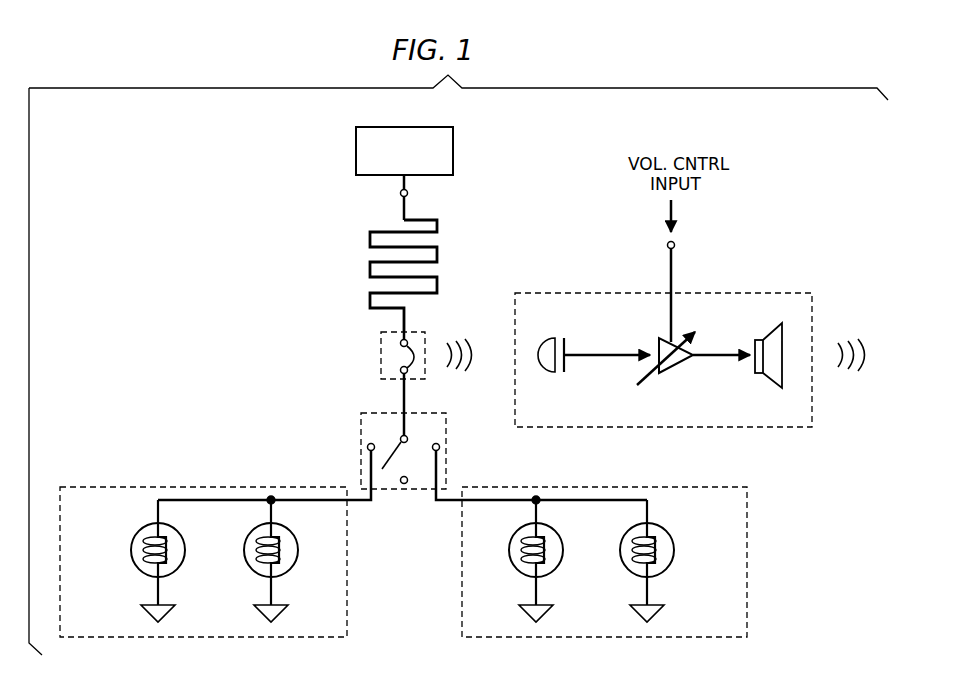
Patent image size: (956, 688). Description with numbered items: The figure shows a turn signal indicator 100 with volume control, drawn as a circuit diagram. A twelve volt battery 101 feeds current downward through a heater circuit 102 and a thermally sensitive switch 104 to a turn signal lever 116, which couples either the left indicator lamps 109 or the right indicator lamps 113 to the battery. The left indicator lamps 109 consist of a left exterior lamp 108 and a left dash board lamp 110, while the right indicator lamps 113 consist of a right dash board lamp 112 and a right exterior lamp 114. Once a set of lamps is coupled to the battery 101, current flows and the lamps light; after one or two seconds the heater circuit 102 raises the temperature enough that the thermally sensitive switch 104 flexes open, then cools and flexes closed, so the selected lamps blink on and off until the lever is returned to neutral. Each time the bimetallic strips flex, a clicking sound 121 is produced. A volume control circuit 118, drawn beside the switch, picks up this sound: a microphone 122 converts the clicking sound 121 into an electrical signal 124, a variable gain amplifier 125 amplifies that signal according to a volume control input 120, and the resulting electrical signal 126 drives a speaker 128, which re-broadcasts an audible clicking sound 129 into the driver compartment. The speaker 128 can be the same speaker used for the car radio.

The turn signal indicator 100 is at (208, 240).
The 12 volt battery 101 is at (455, 160).
The heater circuit 102 is at (370, 238).
The thermally sensitive switch 104 is at (381, 345).
The left exterior lamp 108 is at (138, 568).
The left indicator lamps 109 is at (347, 562).
The left dash board lamp 110 is at (250, 568).
The right dash board lamp 112 is at (558, 567).
The right indicator lamps 113 is at (747, 562).
The right exterior lamp 114 is at (669, 567).
The turn signal lever 116 is at (480, 453).
The volume control circuit 118 is at (600, 293).
The volume control input 120 is at (675, 210).
The clicking sound 121 is at (453, 333).
The microphone 122 is at (566, 364).
The electrical signal 124 is at (602, 352).
The variable gain amplifier 125 is at (660, 372).
The electrical signal 126 is at (712, 360).
The speaker 128 is at (765, 333).
The audible clicking sound 129 is at (848, 333).